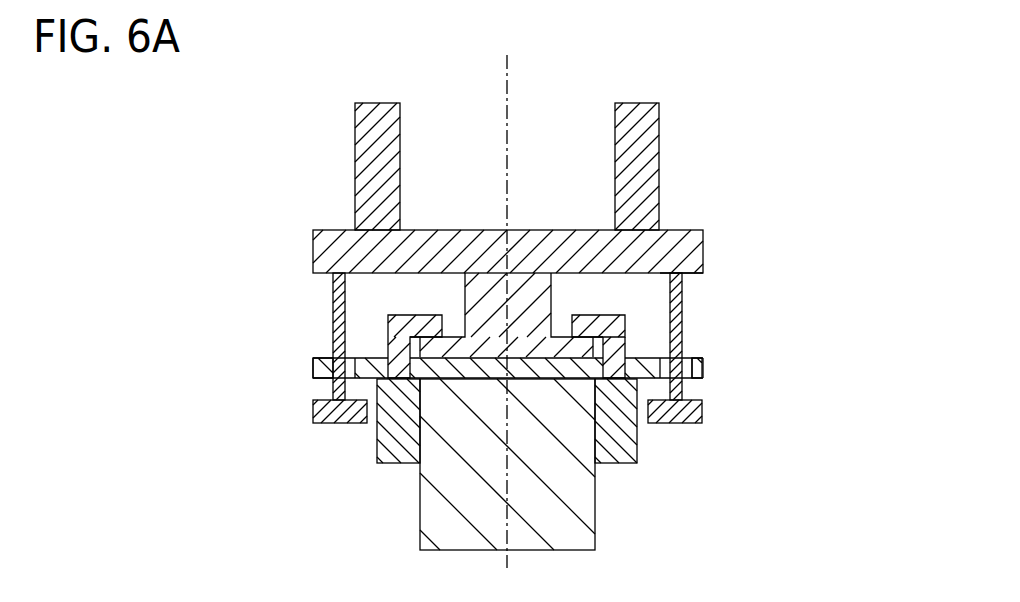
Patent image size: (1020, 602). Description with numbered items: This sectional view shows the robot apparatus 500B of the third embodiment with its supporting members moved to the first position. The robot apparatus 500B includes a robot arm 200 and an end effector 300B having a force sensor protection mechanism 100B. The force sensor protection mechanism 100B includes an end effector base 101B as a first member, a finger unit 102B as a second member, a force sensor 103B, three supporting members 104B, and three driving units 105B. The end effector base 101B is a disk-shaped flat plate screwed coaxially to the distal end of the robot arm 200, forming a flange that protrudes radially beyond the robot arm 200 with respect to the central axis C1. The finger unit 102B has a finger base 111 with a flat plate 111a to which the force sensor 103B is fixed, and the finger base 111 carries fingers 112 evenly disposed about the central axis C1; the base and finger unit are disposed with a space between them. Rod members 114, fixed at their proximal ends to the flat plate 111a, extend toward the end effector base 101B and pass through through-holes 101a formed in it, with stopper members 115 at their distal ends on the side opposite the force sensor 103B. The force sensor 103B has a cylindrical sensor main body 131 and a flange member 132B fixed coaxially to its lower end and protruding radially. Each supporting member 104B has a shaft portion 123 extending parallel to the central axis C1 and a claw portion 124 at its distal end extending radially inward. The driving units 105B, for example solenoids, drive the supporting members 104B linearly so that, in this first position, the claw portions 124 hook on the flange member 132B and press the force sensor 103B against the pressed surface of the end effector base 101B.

The robot apparatus 500B is at (584, 108).
The end effector 300B is at (318, 141).
The force sensor protection mechanism 100B is at (692, 135).
The finger unit 102B is at (690, 225).
The finger base 111 is at (695, 252).
The flat plate 111a is at (692, 276).
The projection 112 is at (380, 106).
The rod member 114 is at (333, 318).
The stopper member 115 is at (318, 412).
The end effector base 101B is at (697, 373).
The through-hole 101a is at (325, 368).
The force sensor 103B is at (222, 215).
The sensor main body 131 is at (490, 292).
The flange member 132B is at (442, 343).
The supporting member 104B is at (753, 300).
The claw portion 124 is at (610, 325).
The shaft portion 123 is at (613, 350).
The driving unit 105B is at (625, 428).
The robot arm 200 is at (583, 494).
The central axis C1 is at (506, 85).